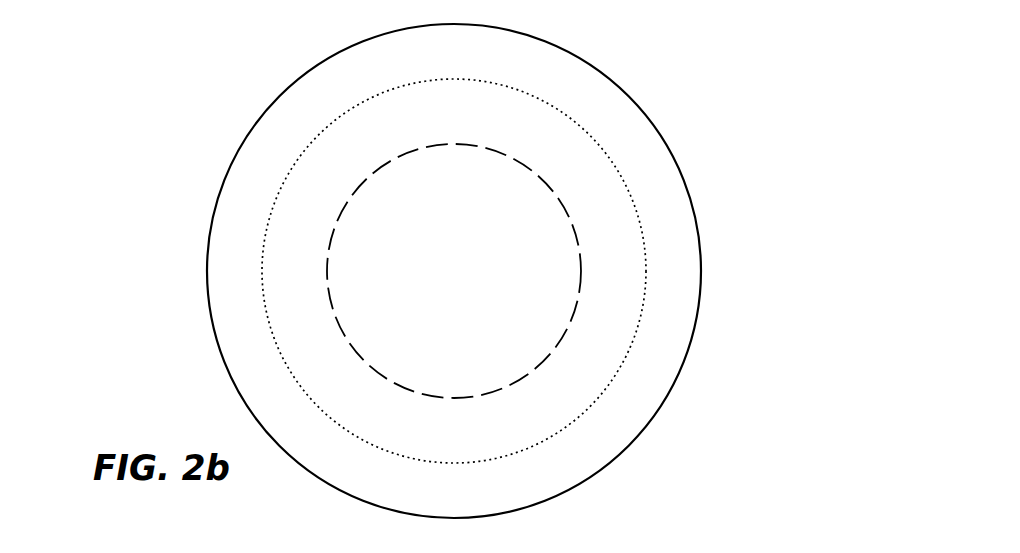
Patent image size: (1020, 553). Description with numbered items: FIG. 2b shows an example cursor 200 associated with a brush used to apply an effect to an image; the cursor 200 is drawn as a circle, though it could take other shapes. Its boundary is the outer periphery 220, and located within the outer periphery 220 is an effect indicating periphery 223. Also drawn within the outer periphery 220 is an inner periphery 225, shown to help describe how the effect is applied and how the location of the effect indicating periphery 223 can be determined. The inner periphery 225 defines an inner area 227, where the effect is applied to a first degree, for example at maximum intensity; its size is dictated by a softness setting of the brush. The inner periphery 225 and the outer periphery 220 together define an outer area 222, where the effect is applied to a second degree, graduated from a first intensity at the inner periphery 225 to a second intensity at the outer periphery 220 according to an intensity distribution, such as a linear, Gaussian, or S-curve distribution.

The cursor 200 is at (233, 112).
The outer periphery 220 is at (649, 115).
The outer area 222 is at (645, 179).
The effect indicating periphery 223 is at (625, 355).
The inner periphery 225 is at (578, 242).
The inner area 227 is at (418, 360).